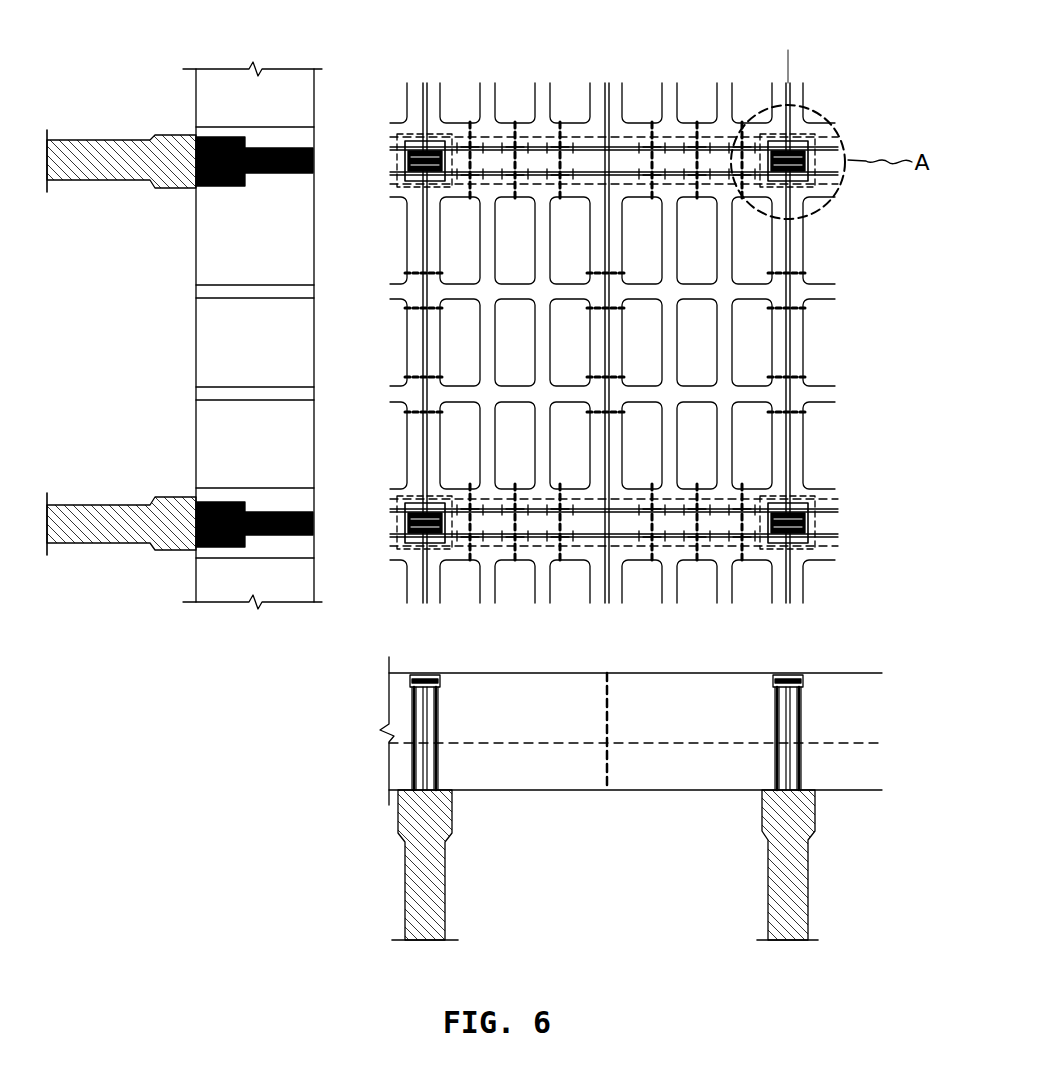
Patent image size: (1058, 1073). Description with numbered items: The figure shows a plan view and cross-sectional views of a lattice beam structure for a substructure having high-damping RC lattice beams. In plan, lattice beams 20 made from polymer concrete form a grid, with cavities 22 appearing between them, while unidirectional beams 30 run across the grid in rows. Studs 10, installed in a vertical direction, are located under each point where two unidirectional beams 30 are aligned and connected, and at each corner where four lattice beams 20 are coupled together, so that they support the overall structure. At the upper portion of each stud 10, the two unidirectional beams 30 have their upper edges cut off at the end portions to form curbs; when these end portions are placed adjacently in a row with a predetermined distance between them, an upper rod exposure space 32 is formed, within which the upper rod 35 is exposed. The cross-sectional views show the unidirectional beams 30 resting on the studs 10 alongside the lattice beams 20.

The stud 10 is at (99, 190).
The lattice beam 20 is at (186, 335).
The cavity 22 is at (752, 456).
The unidirectional beam 30 is at (221, 126).
The upper rod exposure space 32 is at (814, 147).
The upper rod 35 is at (796, 150).